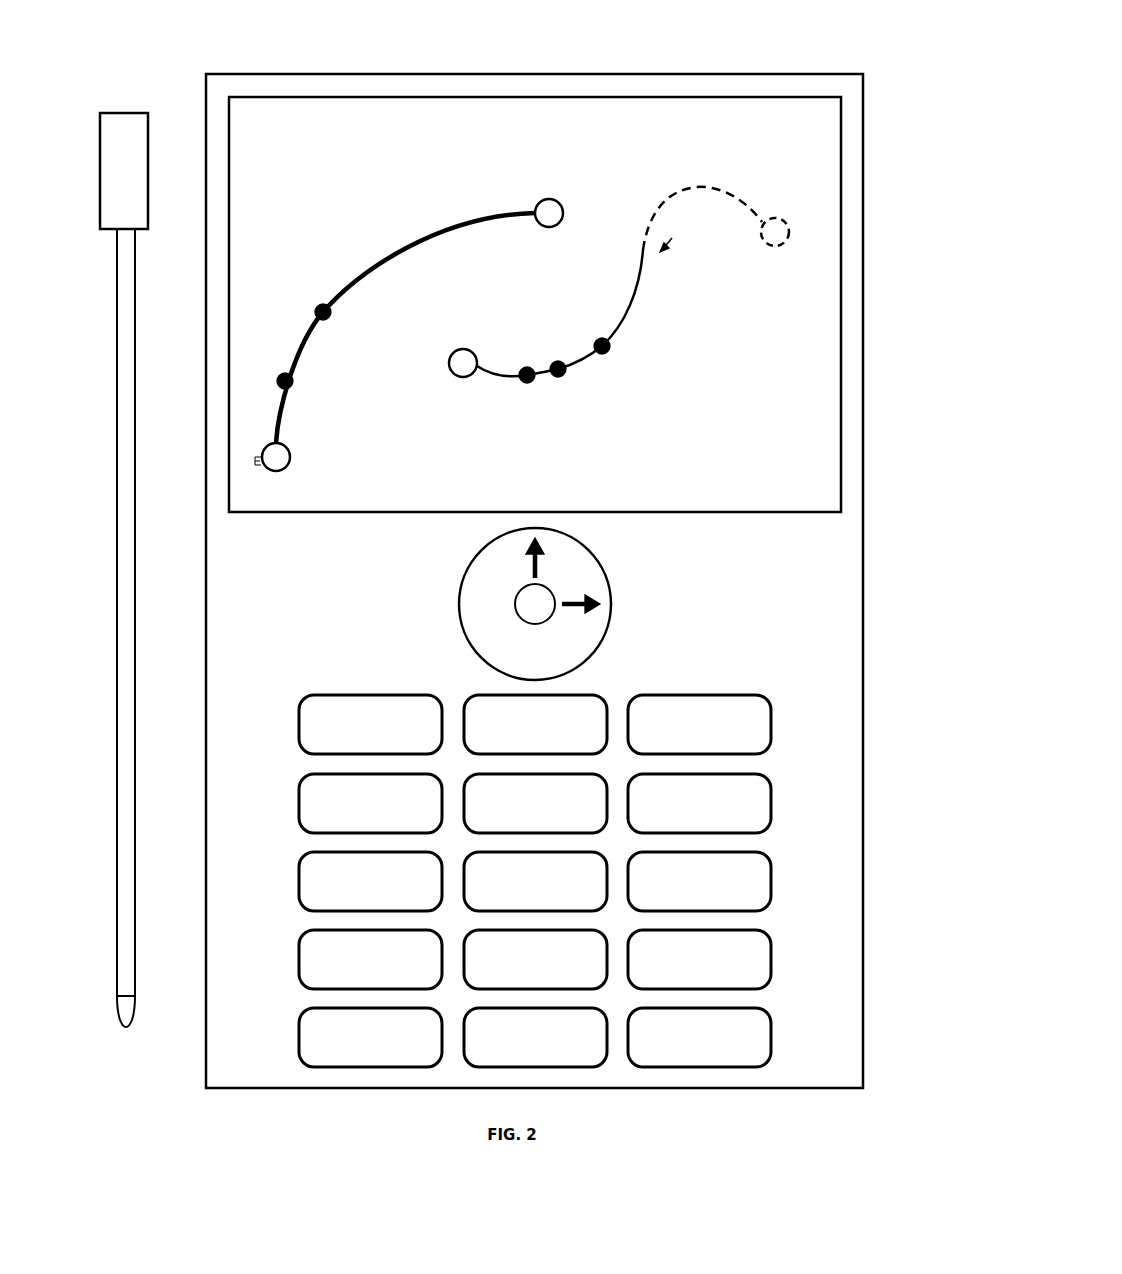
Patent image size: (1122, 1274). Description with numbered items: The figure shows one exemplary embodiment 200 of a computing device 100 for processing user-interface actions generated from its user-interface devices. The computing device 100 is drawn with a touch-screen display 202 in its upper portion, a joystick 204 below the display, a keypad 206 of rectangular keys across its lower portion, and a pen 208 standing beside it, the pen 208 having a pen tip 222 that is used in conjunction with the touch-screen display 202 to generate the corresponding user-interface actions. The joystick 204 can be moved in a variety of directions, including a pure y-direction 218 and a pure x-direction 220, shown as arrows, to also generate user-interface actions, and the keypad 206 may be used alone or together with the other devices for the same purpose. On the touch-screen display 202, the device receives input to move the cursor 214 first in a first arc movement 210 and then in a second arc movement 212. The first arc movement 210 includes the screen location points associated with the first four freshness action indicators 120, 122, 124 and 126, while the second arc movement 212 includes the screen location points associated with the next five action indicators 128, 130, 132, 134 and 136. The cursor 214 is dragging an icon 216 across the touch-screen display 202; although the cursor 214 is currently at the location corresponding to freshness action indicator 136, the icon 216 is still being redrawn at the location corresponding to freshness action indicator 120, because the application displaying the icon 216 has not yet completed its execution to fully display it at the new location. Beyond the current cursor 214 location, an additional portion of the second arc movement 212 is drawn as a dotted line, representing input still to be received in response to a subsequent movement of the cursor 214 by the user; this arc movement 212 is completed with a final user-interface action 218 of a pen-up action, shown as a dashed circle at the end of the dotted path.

The computing device 100 is at (722, 73).
The exemplary embodiment 200 is at (117, 36).
The touch-screen display 202 is at (769, 97).
The joystick 204 is at (546, 585).
The keypad 206 is at (793, 835).
The pen 208 is at (116, 535).
The first arc movement 210 is at (353, 283).
The second arc movement 212 is at (692, 186).
The cursor 214 is at (685, 248).
The icon 216 is at (242, 477).
The final U/I action / pure y-direction 218 is at (788, 240).
The pure x-direction 220 is at (578, 612).
The pen tip 222 is at (125, 1022).
The freshness action indicator 120 is at (290, 456).
The freshness action indicator 122 is at (293, 380).
The freshness action indicator 124 is at (321, 304).
The freshness action indicator 126 is at (546, 199).
The action indicator 128 is at (460, 349).
The action indicator 130 is at (526, 383).
The action indicator 132 is at (560, 377).
The action indicator 134 is at (608, 352).
The freshness action indicator 136 is at (643, 252).